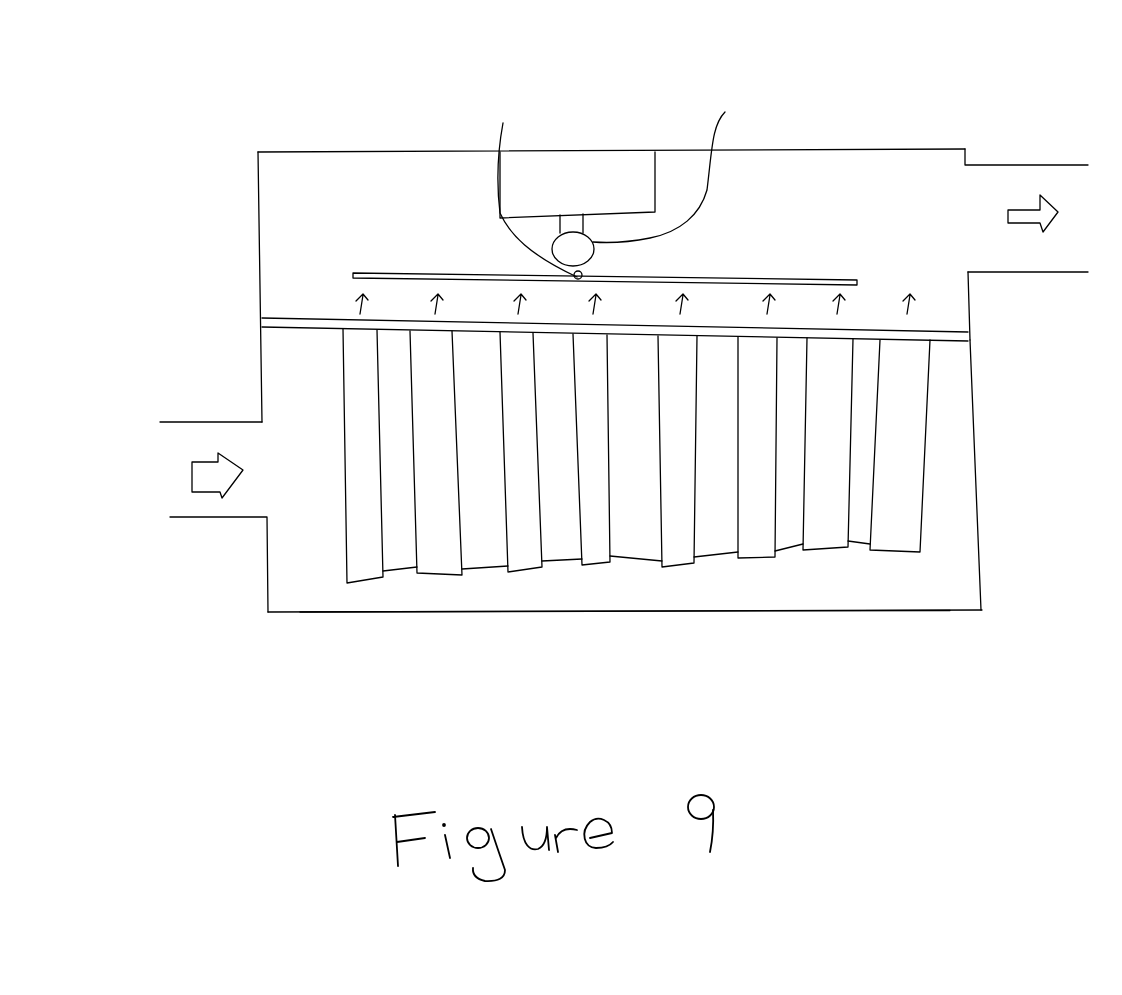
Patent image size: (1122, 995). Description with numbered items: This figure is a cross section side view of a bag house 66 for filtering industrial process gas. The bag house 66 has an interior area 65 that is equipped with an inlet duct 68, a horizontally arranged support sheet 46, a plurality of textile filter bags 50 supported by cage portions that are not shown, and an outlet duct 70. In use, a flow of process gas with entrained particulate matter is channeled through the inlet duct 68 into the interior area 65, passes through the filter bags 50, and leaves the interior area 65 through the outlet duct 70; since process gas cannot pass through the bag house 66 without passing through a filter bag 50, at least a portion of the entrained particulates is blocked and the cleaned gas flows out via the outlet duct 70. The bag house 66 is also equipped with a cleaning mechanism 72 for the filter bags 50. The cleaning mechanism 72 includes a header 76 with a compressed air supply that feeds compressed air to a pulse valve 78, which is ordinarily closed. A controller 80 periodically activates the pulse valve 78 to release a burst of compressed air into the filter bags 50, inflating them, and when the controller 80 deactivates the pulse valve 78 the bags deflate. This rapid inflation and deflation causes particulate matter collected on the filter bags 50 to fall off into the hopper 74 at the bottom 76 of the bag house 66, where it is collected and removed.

The support sheet 46 is at (952, 345).
The textile filter bag 50 is at (920, 512).
The interior area 65 is at (283, 258).
The bag house 66 is at (875, 148).
The inlet duct 68 is at (212, 518).
The outlet duct 70 is at (1048, 274).
The cleaning mechanism 72 is at (568, 160).
The hopper 74 is at (595, 605).
The header 76 is at (737, 278).
The pulse valve 78 is at (539, 189).
The controller 80 is at (674, 168).